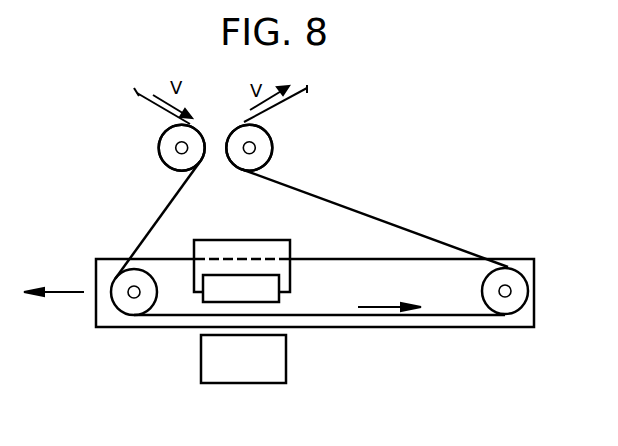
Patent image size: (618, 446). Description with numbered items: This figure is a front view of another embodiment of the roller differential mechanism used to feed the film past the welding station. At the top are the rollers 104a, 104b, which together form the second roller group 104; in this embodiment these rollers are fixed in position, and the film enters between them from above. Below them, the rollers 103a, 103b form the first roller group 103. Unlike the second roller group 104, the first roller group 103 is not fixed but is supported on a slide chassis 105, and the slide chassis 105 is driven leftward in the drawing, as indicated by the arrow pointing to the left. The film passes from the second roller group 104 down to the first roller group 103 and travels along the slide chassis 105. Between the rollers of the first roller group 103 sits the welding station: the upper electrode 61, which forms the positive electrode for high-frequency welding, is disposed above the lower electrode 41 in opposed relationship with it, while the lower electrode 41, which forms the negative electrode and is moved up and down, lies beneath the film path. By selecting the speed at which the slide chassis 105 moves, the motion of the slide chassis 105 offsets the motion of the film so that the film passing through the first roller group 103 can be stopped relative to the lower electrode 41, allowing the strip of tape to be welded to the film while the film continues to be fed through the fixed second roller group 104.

The second roller group 104 is at (303, 118).
The roller 104a is at (168, 162).
The roller 104b is at (248, 162).
The slide chassis 105 is at (525, 263).
The first roller group 103 is at (553, 255).
The roller 103a is at (133, 310).
The roller 103b is at (507, 308).
The upper electrode 61 is at (270, 282).
The lower electrode 41 is at (278, 369).